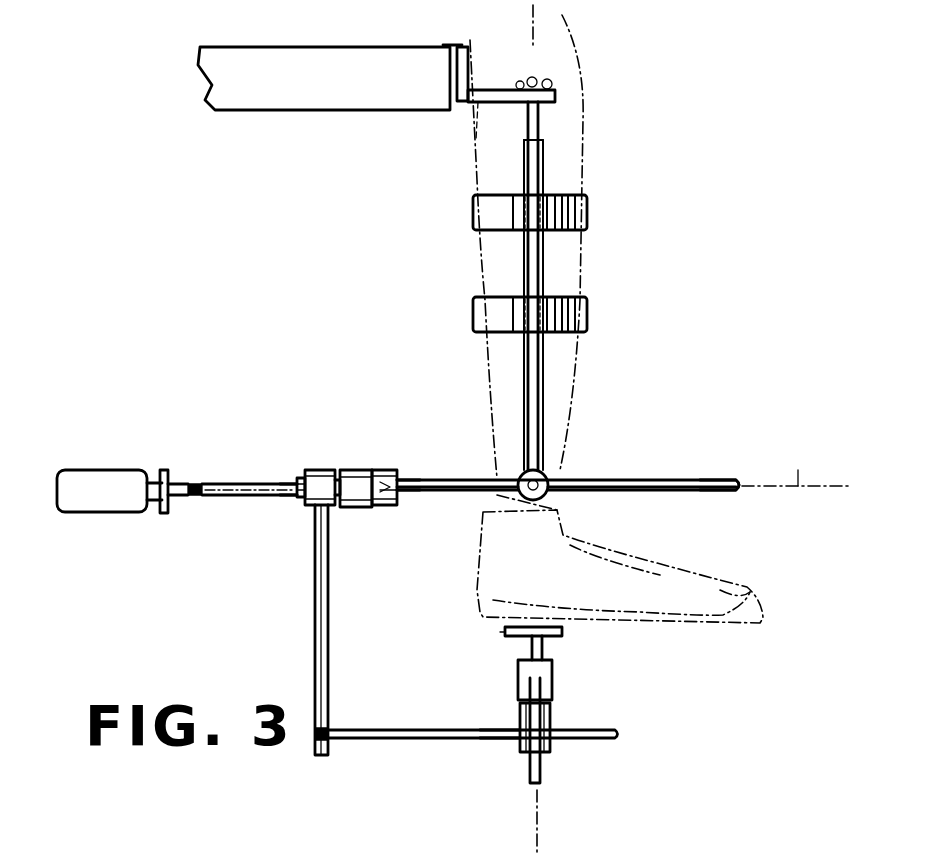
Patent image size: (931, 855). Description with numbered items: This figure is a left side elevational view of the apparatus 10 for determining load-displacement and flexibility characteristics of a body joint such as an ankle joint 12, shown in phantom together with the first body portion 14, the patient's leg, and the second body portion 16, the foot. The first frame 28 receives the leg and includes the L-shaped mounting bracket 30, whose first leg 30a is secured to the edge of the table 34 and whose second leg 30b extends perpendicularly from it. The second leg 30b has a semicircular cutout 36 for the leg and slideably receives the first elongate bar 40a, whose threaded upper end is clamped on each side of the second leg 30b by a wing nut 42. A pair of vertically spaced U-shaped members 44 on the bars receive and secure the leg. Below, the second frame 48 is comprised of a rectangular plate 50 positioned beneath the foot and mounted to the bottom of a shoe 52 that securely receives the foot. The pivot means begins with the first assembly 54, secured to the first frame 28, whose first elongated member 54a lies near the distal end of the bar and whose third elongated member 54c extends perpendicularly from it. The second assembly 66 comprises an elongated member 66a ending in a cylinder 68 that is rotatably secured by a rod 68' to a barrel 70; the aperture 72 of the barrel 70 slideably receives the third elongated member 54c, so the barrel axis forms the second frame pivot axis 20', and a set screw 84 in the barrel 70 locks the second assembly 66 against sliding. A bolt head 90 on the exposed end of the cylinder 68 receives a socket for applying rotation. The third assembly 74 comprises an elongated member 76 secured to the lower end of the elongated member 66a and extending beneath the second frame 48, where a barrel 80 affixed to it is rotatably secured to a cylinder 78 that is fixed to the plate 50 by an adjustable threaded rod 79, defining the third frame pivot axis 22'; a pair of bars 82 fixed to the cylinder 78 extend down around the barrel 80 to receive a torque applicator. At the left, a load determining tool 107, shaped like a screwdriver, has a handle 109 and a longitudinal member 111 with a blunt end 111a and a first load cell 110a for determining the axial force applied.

The apparatus 10 is at (290, 560).
The ankle joint 12 is at (560, 497).
The first body portion 14 is at (572, 380).
The second body portion 16 is at (655, 575).
The second frame pivot axis 20' is at (795, 457).
The third frame pivot axis 22' is at (546, 430).
The first frame 28 is at (548, 175).
The mounting bracket 30 is at (460, 108).
The first leg 30a is at (468, 60).
The second leg 30b is at (558, 94).
The table 34 is at (335, 58).
The semicircular cutout 36 is at (476, 140).
The first elongate bar 40a is at (523, 158).
The wing nut 42 is at (518, 83).
The U-shaped members 44 is at (472, 215).
The second frame 48 is at (498, 635).
The plate 50 is at (562, 634).
The shoe 52 is at (755, 602).
The first assembly 54 is at (640, 478).
The first elongated member 54a is at (708, 478).
The third elongated member 54c is at (376, 508).
The second assembly 66 is at (318, 470).
The elongated member 66a is at (330, 647).
The cylinder 68 is at (301, 511).
The rod 68' is at (356, 518).
The barrel 70 is at (394, 470).
The aperture 72 is at (372, 470).
The third assembly 74 is at (505, 744).
The elongated member 76 is at (425, 740).
The cylinder 78 is at (554, 674).
The threaded rod 79 is at (530, 652).
The barrel 80 is at (552, 720).
The bars 82 is at (528, 699).
The set screw 84 is at (315, 734).
The bolt head 90 is at (548, 478).
The load determining tool 107 is at (205, 509).
The handle 109 is at (108, 507).
The first load cell 110a is at (198, 482).
The longitudinal member 111 is at (252, 498).
The blunt end 111a is at (292, 480).